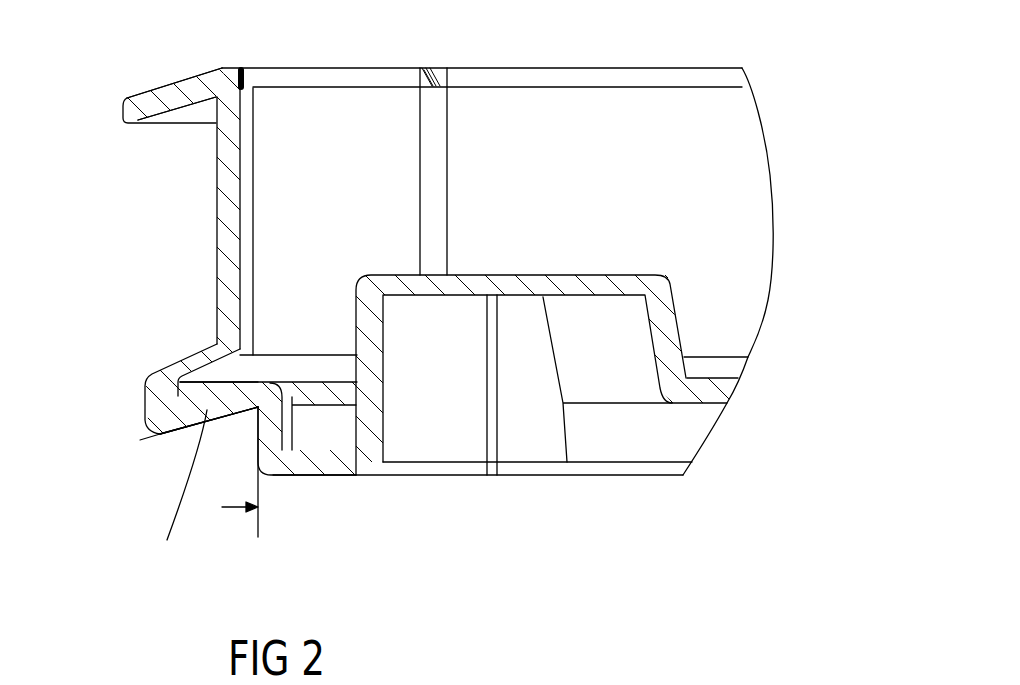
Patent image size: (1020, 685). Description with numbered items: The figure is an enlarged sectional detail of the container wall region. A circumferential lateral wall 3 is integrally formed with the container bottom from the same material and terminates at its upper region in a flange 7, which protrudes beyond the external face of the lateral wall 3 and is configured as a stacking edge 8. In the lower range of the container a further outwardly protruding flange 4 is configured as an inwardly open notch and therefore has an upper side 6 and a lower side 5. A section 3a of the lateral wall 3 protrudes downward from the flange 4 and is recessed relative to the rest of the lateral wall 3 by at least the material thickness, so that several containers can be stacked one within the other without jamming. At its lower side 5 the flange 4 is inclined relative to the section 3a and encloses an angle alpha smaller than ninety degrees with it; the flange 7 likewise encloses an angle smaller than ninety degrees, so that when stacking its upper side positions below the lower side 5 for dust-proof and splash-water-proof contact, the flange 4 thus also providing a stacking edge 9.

The lateral wall 3 is at (459, 271).
The section of the lateral wall 3a is at (270, 428).
The flange 4 is at (147, 423).
The lower side 5 is at (152, 440).
The upper side 6 is at (172, 362).
The flange 7 is at (150, 105).
The stacking edge 8 is at (174, 94).
The stacking edge 9 is at (209, 420).